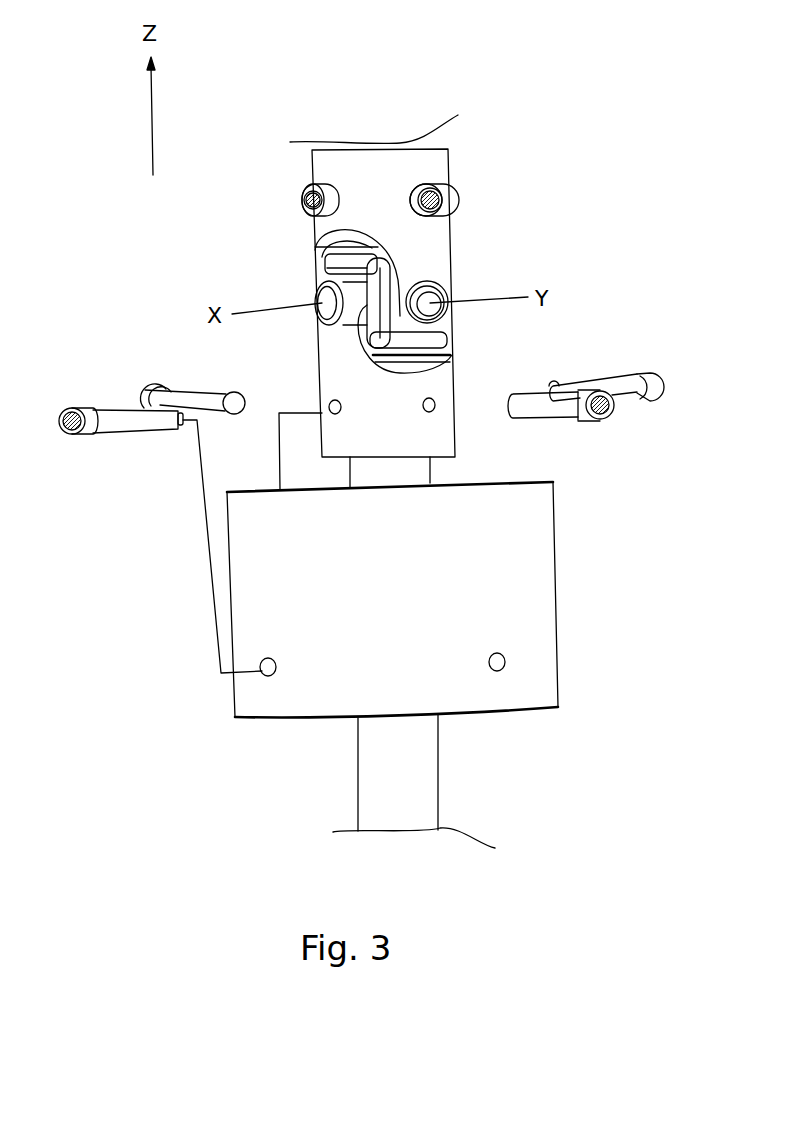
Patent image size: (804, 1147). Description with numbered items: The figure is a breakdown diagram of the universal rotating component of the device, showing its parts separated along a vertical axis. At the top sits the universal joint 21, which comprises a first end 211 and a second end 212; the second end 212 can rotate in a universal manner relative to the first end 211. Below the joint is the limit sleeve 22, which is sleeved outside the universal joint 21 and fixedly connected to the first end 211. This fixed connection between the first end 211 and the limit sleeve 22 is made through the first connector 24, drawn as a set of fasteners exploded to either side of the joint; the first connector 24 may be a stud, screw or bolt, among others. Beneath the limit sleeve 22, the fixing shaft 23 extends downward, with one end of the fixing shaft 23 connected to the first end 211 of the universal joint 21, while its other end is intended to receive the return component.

The universal joint 21 is at (456, 302).
The first end 211 is at (338, 335).
The second end 212 is at (427, 240).
The limit sleeve 22 is at (497, 595).
The fixing shaft 23 is at (418, 775).
The first connector 24 is at (118, 415).